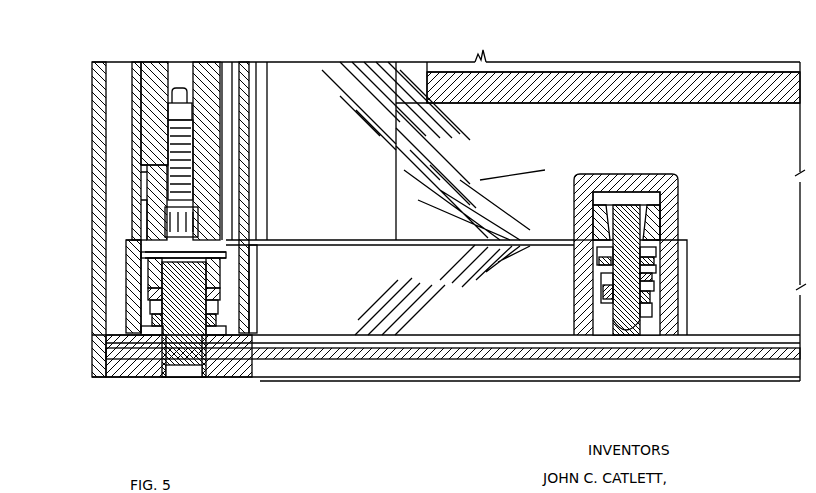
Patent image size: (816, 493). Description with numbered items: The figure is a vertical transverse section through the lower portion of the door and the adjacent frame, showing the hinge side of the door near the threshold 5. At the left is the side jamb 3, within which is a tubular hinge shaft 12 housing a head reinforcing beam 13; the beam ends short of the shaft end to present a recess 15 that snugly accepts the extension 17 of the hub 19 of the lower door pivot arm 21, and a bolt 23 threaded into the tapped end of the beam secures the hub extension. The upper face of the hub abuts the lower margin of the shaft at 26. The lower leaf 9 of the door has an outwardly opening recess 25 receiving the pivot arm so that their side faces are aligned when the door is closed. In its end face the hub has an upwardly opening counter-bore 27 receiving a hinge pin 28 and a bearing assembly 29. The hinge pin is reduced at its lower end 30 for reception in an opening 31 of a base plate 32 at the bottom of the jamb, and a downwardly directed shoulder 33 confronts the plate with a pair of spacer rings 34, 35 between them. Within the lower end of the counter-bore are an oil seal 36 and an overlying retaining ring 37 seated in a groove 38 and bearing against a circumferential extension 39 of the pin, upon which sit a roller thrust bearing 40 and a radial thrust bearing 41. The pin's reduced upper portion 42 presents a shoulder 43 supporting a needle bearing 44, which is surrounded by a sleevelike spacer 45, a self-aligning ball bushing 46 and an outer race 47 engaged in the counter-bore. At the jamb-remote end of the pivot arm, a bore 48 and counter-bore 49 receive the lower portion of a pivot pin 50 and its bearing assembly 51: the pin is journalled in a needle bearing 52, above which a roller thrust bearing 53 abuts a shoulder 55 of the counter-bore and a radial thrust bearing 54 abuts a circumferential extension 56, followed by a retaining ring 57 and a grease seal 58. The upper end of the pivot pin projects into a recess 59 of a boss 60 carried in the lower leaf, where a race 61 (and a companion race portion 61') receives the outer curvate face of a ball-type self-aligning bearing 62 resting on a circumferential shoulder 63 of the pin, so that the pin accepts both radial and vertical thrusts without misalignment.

The side jamb 3 is at (94, 62).
The hinge shaft 12 is at (136, 62).
The head reinforcing beam 13 is at (153, 62).
The lower leaf 9 is at (548, 125).
The boss 60 is at (622, 175).
The self-aligning bearing 62 is at (680, 195).
The bushing 61' is at (566, 222).
The race 61 is at (700, 220).
The recess 59 is at (675, 233).
The circumferential shoulder 63 is at (682, 241).
The grease seal 58 is at (668, 250).
The retaining ring 57 is at (672, 263).
The circumferential extension 56 is at (668, 272).
The roller thrust bearing 53 is at (662, 282).
The radial thrust bearing 54 is at (662, 292).
The shoulder 55 is at (655, 287).
The needle bearing 52 is at (657, 302).
The counter-bore 49 is at (595, 266).
The bore 48 is at (597, 300).
The pivot pin 50 is at (618, 312).
The bearing assembly 51 is at (650, 302).
The threshold 5 is at (755, 378).
The lower door pivot arm 21 is at (438, 323).
The recess 25 is at (442, 245).
The circumferential extension 39 is at (236, 330).
The shoulder 33 is at (230, 334).
The spacer ring 34 is at (222, 330).
The spacer ring 35 is at (218, 325).
The base plate 32 is at (232, 378).
The reduced lower end 30 is at (214, 378).
The opening 31 is at (200, 378).
The hinge pin 28 is at (185, 378).
The oil seal 36 is at (135, 378).
The groove 38 is at (107, 323).
The retaining ring 37 is at (135, 316).
The bearing assembly 29 is at (128, 292).
The shoulder 43 is at (140, 283).
The counter-bore 27 is at (135, 270).
The hub 19 is at (130, 246).
The abutment 26 is at (132, 236).
The bolt 23 is at (135, 223).
The extension 17 is at (135, 212).
The recess 15 is at (135, 186).
The needle bearing 44 is at (236, 236).
The sleevelike spacer 45 is at (238, 246).
The self-aligning ball bushing 46 is at (252, 268).
The outer race 47 is at (252, 277).
The reduced upper end portion 42 is at (250, 287).
The roller thrust bearing 40 is at (252, 298).
The radial thrust bearing 41 is at (250, 315).